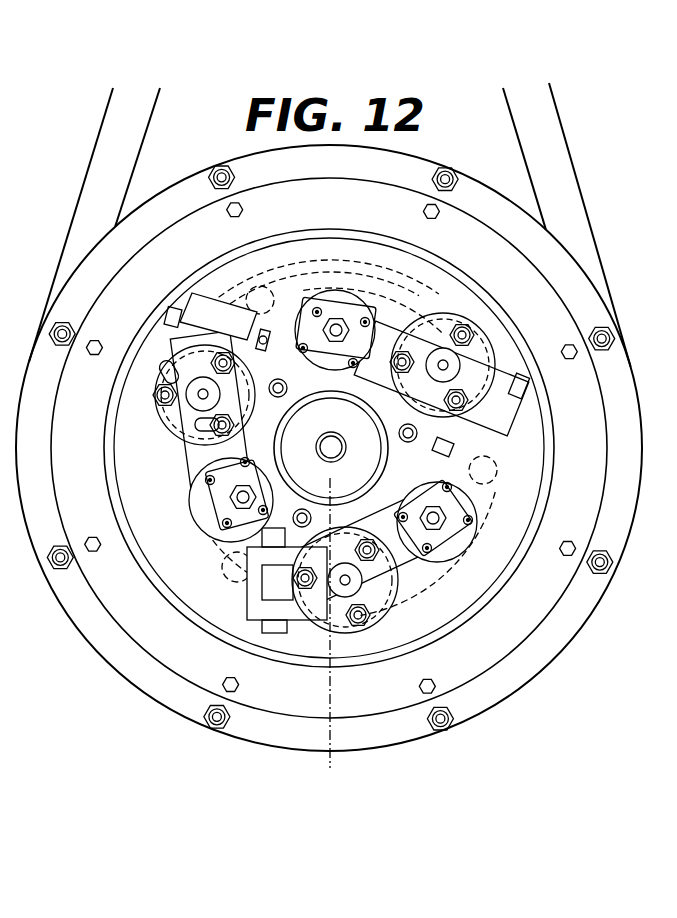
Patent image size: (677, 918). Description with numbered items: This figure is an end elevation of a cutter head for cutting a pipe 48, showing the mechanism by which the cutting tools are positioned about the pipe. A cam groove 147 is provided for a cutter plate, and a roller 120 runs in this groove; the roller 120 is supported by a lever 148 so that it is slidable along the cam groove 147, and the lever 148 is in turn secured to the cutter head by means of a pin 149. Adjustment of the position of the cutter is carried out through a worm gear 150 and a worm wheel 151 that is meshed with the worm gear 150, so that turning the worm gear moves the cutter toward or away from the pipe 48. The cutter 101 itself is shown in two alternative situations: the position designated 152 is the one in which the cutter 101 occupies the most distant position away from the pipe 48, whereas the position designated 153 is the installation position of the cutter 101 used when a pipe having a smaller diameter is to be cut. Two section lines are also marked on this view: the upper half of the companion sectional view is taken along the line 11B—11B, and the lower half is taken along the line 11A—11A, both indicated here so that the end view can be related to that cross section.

The section line 11A— 11A is at (330, 478).
The section line 11B— 11B is at (208, 575).
The pipe 48 is at (303, 408).
The cutter 101 is at (195, 513).
The roller 120 is at (329, 448).
The cam groove 147 is at (329, 432).
The lever 148 is at (185, 362).
The pin 149 is at (158, 398).
The worm gear 150 is at (331, 448).
The worm wheel 151 is at (165, 358).
The position of the cutter most distant from the pipe 152 is at (458, 640).
The installation position of the cutter for a smaller-diameter pipe 153 is at (512, 292).